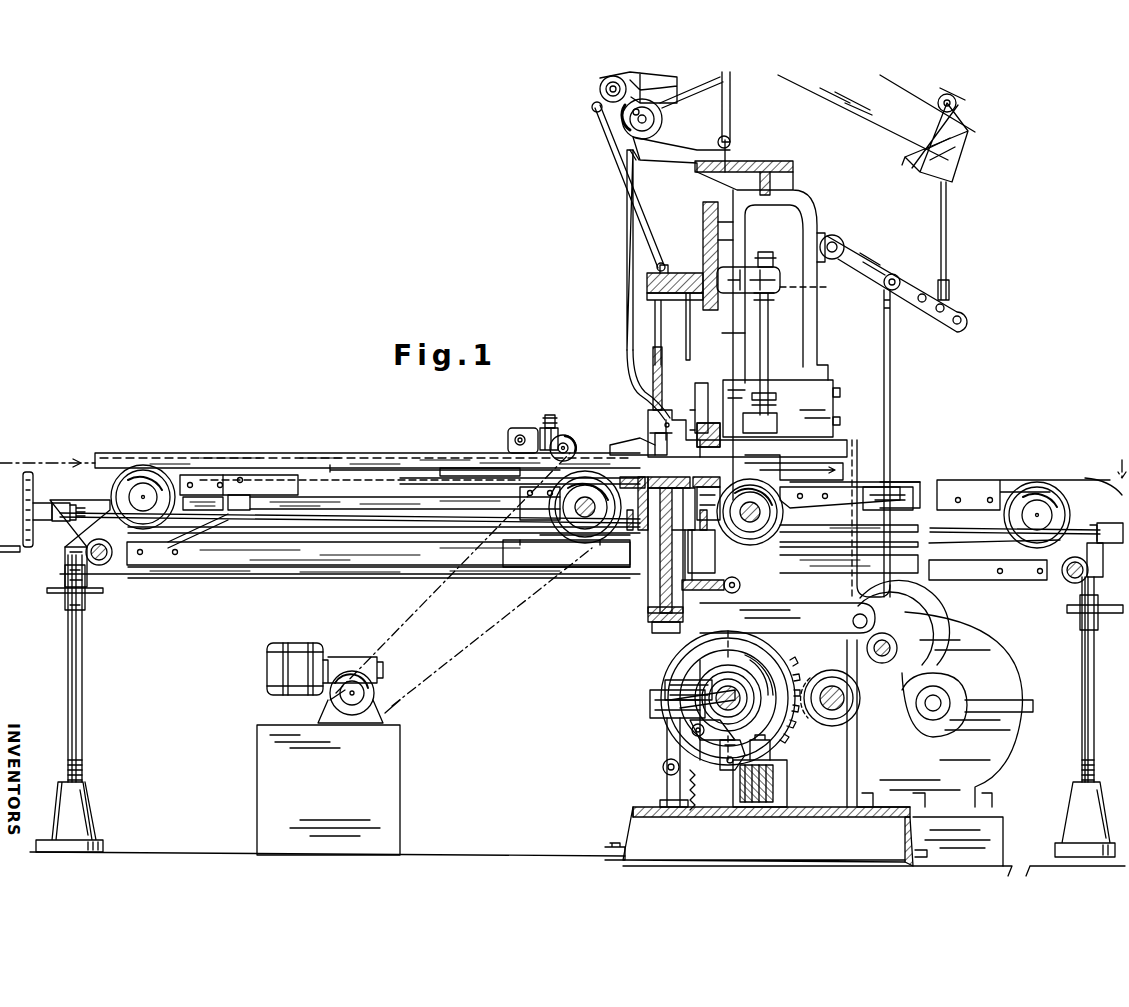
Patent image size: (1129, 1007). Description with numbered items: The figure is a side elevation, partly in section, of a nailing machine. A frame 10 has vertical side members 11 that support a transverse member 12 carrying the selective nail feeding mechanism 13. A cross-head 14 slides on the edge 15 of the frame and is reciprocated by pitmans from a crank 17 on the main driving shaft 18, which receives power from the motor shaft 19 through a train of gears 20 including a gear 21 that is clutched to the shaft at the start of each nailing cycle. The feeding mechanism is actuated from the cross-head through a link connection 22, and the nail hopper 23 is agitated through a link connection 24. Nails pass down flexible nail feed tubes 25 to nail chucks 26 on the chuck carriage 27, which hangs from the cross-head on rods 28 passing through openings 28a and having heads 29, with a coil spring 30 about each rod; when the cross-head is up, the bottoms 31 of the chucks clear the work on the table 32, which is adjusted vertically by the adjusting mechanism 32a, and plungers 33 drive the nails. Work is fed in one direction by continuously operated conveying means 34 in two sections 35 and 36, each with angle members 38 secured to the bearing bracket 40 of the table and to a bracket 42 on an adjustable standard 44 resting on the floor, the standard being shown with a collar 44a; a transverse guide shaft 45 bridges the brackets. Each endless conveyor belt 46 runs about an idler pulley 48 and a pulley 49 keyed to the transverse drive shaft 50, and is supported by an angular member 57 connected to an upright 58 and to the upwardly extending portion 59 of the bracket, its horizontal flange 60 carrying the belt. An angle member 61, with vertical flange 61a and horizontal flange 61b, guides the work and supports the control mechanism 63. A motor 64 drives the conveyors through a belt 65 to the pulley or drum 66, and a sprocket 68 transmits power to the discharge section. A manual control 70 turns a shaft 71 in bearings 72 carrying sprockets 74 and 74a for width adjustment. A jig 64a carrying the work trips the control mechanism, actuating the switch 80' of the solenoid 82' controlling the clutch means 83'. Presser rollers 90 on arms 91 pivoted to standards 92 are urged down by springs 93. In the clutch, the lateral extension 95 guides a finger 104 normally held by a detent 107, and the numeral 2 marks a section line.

The section line 2 is at (563, 460).
The frame 10 is at (856, 449).
The vertical side members 11 is at (794, 337).
The transverse member 12 is at (770, 160).
The selective nail feeding mechanism 13 is at (600, 92).
The cross-head 14 is at (703, 228).
The edge of the frame 15 is at (748, 240).
The crank 17 is at (755, 698).
The main driving shaft 18 is at (740, 680).
The motor shaft 19 is at (940, 700).
The train of gears 20 is at (862, 722).
The gear 21 is at (695, 680).
The link connection 22 is at (615, 165).
The nail hopper 23 is at (960, 155).
The link connection 24 is at (895, 368).
The flexible nail feed tubes 25 is at (627, 266).
The nail chucks 26 is at (700, 400).
The chuck carriage 27 is at (822, 445).
The rods 28 is at (766, 332).
The openings 28a is at (783, 282).
The heads 29 is at (772, 256).
The coil spring 30 is at (777, 397).
The bottoms of the chucks 31 is at (670, 503).
The table 32 is at (645, 562).
The adjusting mechanism 32a is at (741, 585).
The plungers 33 is at (688, 358).
The conveying means 34 is at (375, 462).
The conveyor section 35 is at (403, 478).
The conveyor section 36 is at (949, 477).
The angle member 38 is at (990, 575).
The bearing bracket 40 is at (555, 536).
The bracket 42 is at (168, 542).
The standard 44 is at (1090, 652).
The collar 44a is at (1070, 614).
The transverse guide shaft 45 is at (1065, 578).
The endless conveyor belt 46 is at (905, 480).
The idler pulley 48 is at (1038, 495).
The pulley 49 is at (562, 540).
The transverse drive shaft 50 is at (760, 520).
The angular member 57 is at (312, 487).
The upright 58 is at (500, 540).
The upwardly extending portion of the bracket 59 is at (200, 500).
The horizontal flange 60 is at (285, 475).
The angle member 61 is at (405, 462).
The vertical flange 61a is at (256, 478).
The horizontal flange 61b is at (441, 466).
The control mechanism 63 is at (646, 402).
The motor 64 is at (302, 648).
The jig 64a is at (762, 454).
The belt 65 is at (461, 583).
The pulley or drum 66 is at (590, 567).
The sprocket 68 is at (520, 450).
The manual control 70 is at (26, 511).
The shaft 71 is at (280, 505).
The bearings 72 is at (1098, 523).
The sprocket 74 is at (1090, 535).
The sprocket 74a is at (703, 551).
The switch 80' is at (638, 438).
The solenoid 82' is at (780, 771).
The clutch means 83' is at (663, 741).
The presser rollers 90 is at (575, 438).
The arm 91 is at (550, 438).
The standard 92 is at (515, 440).
The spring 93 is at (563, 438).
The lateral extension 95 is at (710, 690).
The finger 104 is at (668, 691).
The detent 107 is at (660, 716).